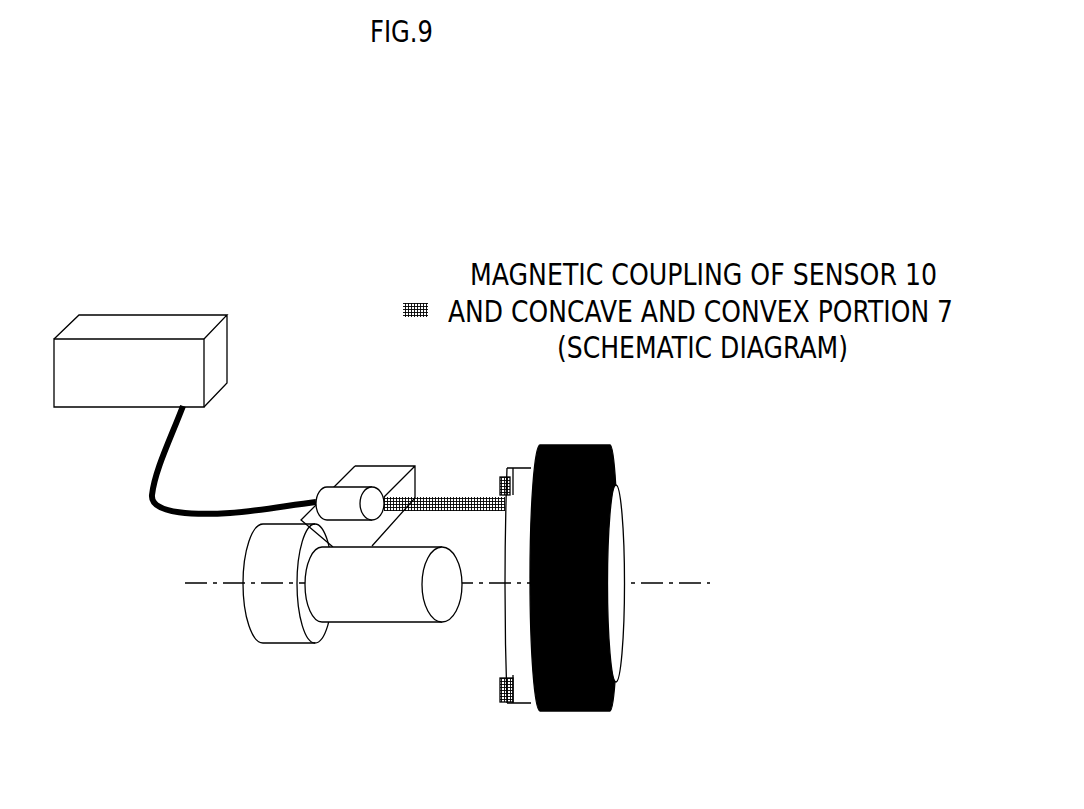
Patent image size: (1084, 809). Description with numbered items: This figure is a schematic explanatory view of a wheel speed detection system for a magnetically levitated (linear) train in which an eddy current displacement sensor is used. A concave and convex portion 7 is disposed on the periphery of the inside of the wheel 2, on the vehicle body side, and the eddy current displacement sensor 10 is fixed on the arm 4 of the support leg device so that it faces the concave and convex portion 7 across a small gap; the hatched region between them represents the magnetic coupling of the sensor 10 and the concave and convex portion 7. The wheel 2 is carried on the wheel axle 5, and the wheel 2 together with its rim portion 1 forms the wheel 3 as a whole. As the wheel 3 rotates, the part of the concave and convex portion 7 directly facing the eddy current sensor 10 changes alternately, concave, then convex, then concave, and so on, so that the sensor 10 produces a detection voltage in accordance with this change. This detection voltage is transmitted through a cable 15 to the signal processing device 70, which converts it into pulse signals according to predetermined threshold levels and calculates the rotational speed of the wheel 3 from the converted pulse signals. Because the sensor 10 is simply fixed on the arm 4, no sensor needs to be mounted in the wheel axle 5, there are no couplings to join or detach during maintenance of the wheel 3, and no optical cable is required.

The tire 1 is at (617, 468).
The wheel 2 is at (612, 533).
The wheel 3 is at (624, 567).
The arm 4 is at (380, 470).
The wheel axle 5 is at (388, 607).
The concave and convex portion 7 is at (505, 470).
The eddy current displacement sensor 10 is at (348, 490).
The cable 15 is at (147, 505).
The signal processing device 70 is at (118, 314).